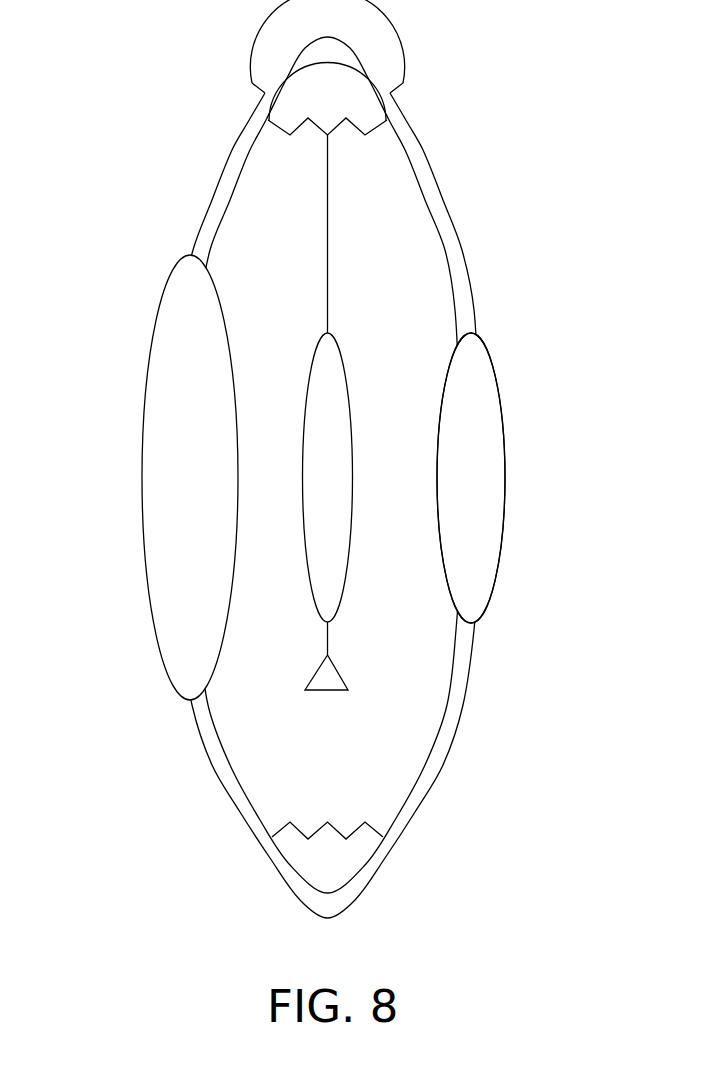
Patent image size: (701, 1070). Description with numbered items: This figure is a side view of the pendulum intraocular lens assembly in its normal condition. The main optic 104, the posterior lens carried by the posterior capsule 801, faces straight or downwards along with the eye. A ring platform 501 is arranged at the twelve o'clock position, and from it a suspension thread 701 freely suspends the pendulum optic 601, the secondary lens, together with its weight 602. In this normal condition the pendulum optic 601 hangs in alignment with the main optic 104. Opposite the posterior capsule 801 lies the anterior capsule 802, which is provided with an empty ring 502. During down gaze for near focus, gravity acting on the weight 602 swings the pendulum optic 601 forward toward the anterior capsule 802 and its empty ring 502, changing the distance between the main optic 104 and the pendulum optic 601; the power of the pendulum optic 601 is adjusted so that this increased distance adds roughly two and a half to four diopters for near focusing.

The main optic 104 is at (155, 475).
The ring platform 501 is at (336, 93).
The suspension thread 701 is at (328, 222).
The pendulum optic 601 is at (352, 398).
The weight 602 is at (338, 672).
The posterior capsule 801 is at (155, 628).
The anterior capsule 802 is at (498, 380).
The empty ring 502 is at (485, 482).